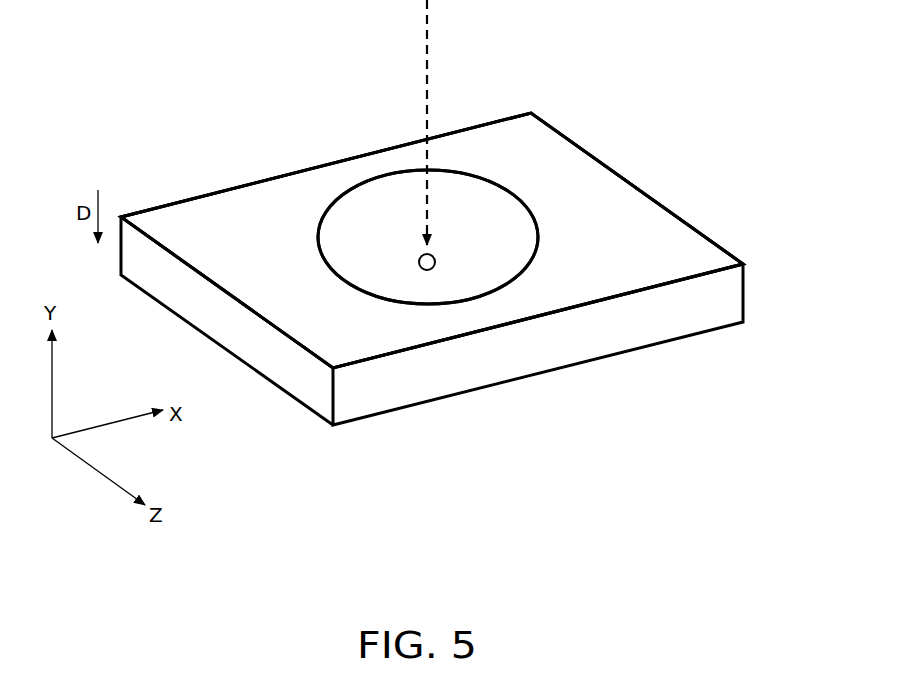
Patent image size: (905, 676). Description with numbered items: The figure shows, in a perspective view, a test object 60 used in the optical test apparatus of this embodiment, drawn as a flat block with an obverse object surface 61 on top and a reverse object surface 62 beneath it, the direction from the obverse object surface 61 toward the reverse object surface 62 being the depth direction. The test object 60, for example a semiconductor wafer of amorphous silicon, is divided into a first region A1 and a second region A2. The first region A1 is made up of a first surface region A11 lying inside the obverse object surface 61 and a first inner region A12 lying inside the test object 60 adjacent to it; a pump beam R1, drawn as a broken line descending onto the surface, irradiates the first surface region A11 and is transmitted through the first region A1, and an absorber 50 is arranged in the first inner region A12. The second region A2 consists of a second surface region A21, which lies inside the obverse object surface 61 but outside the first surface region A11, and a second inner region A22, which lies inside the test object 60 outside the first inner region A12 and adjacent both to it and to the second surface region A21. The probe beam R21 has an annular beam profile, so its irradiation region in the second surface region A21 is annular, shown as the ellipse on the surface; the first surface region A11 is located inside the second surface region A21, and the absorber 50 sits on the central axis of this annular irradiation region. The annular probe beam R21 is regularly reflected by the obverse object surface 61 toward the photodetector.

The absorber 50 is at (426, 271).
The test object 60 is at (459, 269).
The obverse object surface 61 is at (706, 258).
The reverse object surface 62 is at (716, 338).
The pump beam R1 is at (433, 17).
The probe beam R21 is at (521, 274).
The first region A1 is at (665, 112).
The first surface region A11 is at (497, 208).
The first inner region A12 is at (437, 215).
The second region A2 is at (313, 107).
The second surface region A21 is at (362, 178).
The second inner region A22 is at (250, 220).